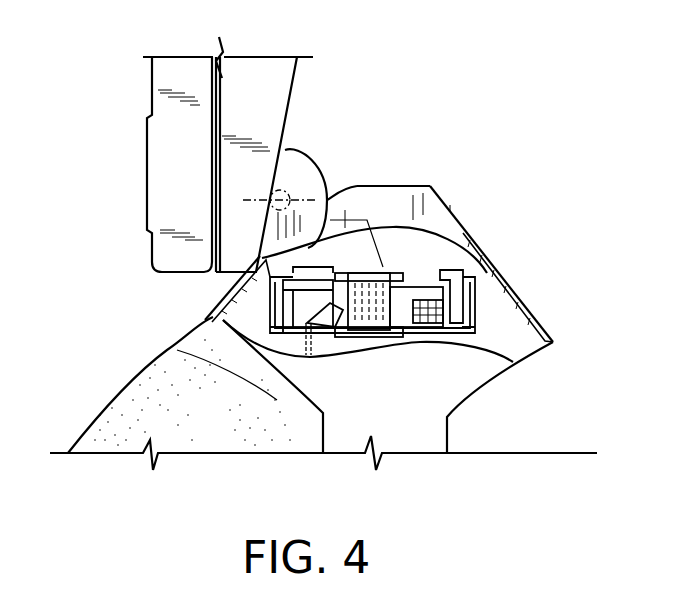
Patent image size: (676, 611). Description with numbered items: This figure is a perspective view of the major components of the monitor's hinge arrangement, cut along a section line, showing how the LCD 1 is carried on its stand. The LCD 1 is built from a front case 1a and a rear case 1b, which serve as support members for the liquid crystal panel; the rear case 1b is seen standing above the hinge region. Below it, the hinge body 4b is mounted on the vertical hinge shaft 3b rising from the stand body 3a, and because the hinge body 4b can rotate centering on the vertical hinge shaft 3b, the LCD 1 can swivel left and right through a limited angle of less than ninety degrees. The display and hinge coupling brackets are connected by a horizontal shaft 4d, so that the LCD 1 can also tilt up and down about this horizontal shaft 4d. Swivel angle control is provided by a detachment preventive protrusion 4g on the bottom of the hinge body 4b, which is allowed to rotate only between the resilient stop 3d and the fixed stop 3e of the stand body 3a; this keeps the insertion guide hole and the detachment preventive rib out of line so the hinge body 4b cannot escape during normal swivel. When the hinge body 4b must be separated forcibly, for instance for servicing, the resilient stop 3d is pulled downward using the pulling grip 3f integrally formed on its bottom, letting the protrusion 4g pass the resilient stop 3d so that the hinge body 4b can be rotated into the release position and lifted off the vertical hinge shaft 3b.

The LCD 1 is at (148, 98).
The front case 1a is at (187, 69).
The rear case 1b is at (277, 69).
The stand body 3a is at (442, 360).
The vertical hinge shaft 3b is at (390, 277).
The resilient stop 3d is at (270, 308).
The fixed stop 3e is at (493, 277).
The pulling grip 3f is at (308, 325).
The hinge body 4b is at (420, 277).
The horizontal shaft 4d is at (292, 206).
The detachment preventive protrusion 4g is at (348, 277).